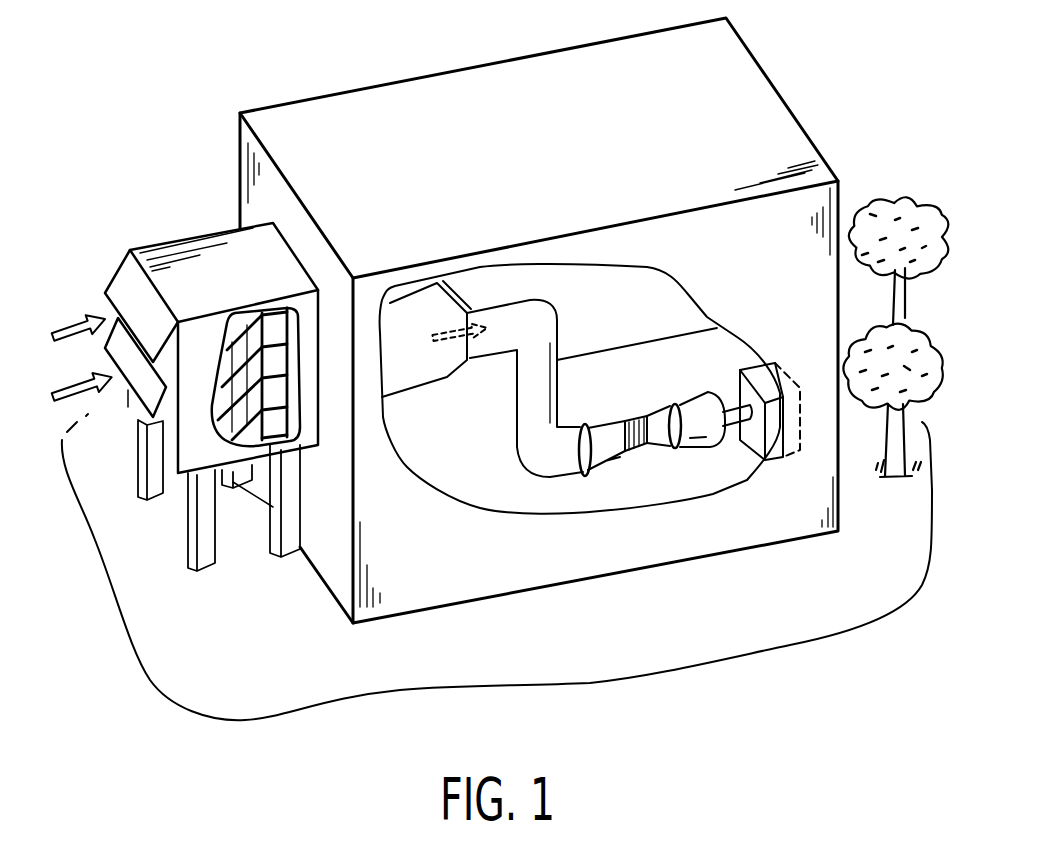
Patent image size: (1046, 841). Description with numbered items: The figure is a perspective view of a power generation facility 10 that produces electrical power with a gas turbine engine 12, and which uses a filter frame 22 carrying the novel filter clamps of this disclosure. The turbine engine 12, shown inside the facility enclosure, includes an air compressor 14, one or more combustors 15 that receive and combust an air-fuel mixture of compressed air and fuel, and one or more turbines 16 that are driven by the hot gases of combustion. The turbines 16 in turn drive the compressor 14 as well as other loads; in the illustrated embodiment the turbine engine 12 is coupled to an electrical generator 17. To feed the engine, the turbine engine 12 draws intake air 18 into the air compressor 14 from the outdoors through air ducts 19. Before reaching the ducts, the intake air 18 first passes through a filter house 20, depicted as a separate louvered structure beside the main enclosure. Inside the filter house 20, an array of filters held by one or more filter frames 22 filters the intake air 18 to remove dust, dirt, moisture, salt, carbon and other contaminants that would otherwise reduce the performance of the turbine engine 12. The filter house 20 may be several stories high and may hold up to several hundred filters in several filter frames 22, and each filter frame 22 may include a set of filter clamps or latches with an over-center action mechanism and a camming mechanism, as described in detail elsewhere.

The power generation facility 10 is at (280, 60).
The gas turbine engine 12 is at (670, 425).
The air compressor 14 is at (616, 455).
The combustor 15 is at (637, 450).
The turbine 16 is at (667, 450).
The electrical generator 17 is at (753, 443).
The intake air 18 is at (82, 332).
The air duct 19 is at (535, 312).
The filter house 20 is at (178, 220).
The filter frame 22 is at (275, 333).